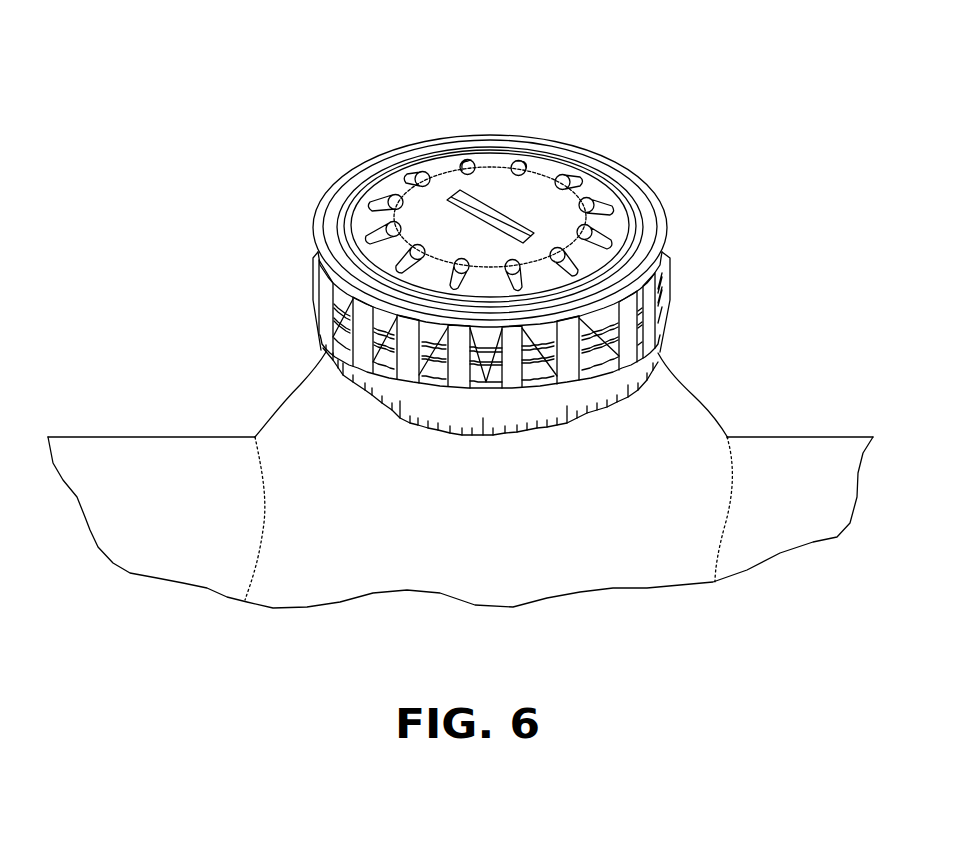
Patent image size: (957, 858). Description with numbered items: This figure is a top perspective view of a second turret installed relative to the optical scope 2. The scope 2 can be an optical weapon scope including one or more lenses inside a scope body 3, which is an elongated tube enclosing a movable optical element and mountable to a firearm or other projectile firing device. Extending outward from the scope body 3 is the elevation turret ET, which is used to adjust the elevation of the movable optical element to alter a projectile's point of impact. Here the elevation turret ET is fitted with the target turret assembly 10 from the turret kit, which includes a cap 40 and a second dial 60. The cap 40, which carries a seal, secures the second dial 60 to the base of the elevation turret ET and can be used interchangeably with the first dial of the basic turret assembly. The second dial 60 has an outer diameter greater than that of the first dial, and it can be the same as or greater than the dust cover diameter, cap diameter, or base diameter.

The elevation turret ET is at (440, 64).
The target turret assembly 10 is at (678, 190).
The cap 40 is at (607, 160).
The second dial 60 is at (319, 159).
The scope 2 is at (135, 414).
The scope body 3 is at (222, 453).